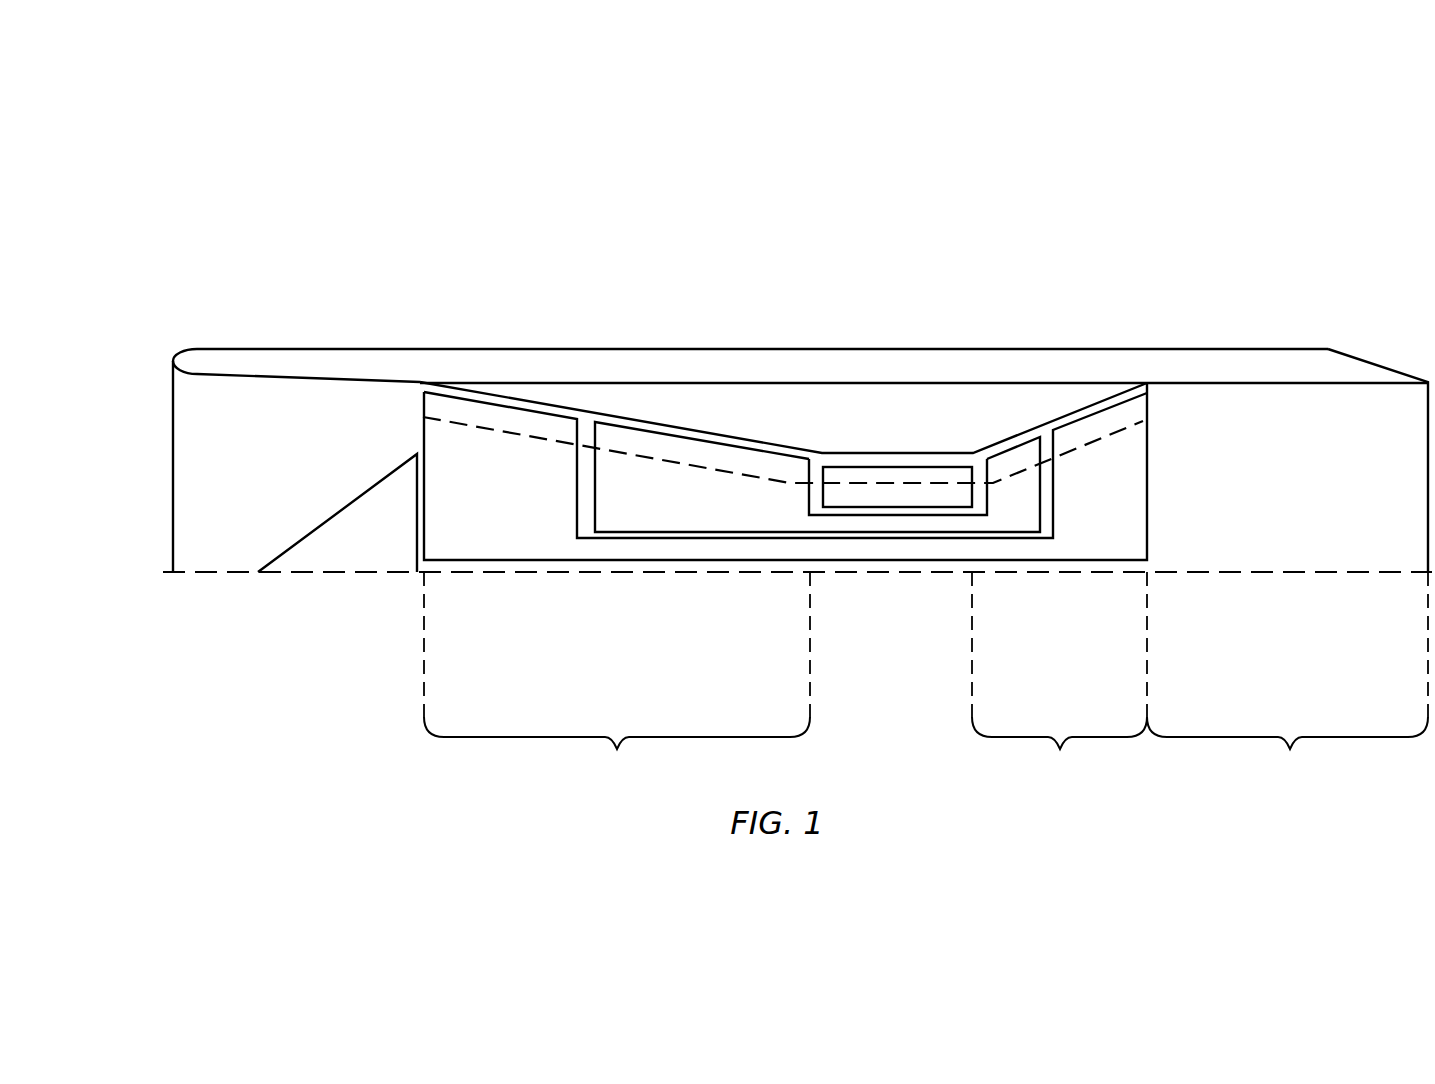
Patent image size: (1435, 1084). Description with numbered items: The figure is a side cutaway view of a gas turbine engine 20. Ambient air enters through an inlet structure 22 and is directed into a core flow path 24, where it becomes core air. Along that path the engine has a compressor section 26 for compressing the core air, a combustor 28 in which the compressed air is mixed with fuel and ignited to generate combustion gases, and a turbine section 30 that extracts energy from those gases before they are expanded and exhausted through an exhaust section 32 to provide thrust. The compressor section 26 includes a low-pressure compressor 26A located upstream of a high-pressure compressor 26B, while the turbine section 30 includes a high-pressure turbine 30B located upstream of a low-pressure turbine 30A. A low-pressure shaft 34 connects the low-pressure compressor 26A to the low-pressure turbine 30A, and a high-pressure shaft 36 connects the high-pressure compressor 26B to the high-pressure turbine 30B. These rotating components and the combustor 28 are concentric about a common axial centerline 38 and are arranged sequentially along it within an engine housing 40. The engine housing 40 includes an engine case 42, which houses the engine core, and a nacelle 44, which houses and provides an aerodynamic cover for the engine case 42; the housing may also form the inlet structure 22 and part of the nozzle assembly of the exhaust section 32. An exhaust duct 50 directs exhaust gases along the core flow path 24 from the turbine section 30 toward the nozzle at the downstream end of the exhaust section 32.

The gas turbine engine 20 is at (1289, 235).
The inlet structure 22 is at (166, 354).
The core flow path 24 is at (502, 428).
The compressor section 26 is at (617, 677).
The low-pressure compressor 26A is at (470, 517).
The high-pressure compressor 26B is at (647, 512).
The combustor 28 is at (893, 498).
The turbine section 30 is at (1059, 676).
The low-pressure turbine 30A is at (1105, 515).
The high-pressure turbine 30B is at (1015, 517).
The exhaust section 32 is at (1287, 676).
The low-pressure shaft 34 is at (932, 552).
The high-pressure shaft 36 is at (839, 523).
The axial centerline 38 is at (185, 573).
The engine housing 40 is at (1082, 329).
The engine case 42 is at (679, 383).
The nacelle 44 is at (841, 348).
The exhaust duct 50 is at (1366, 344).